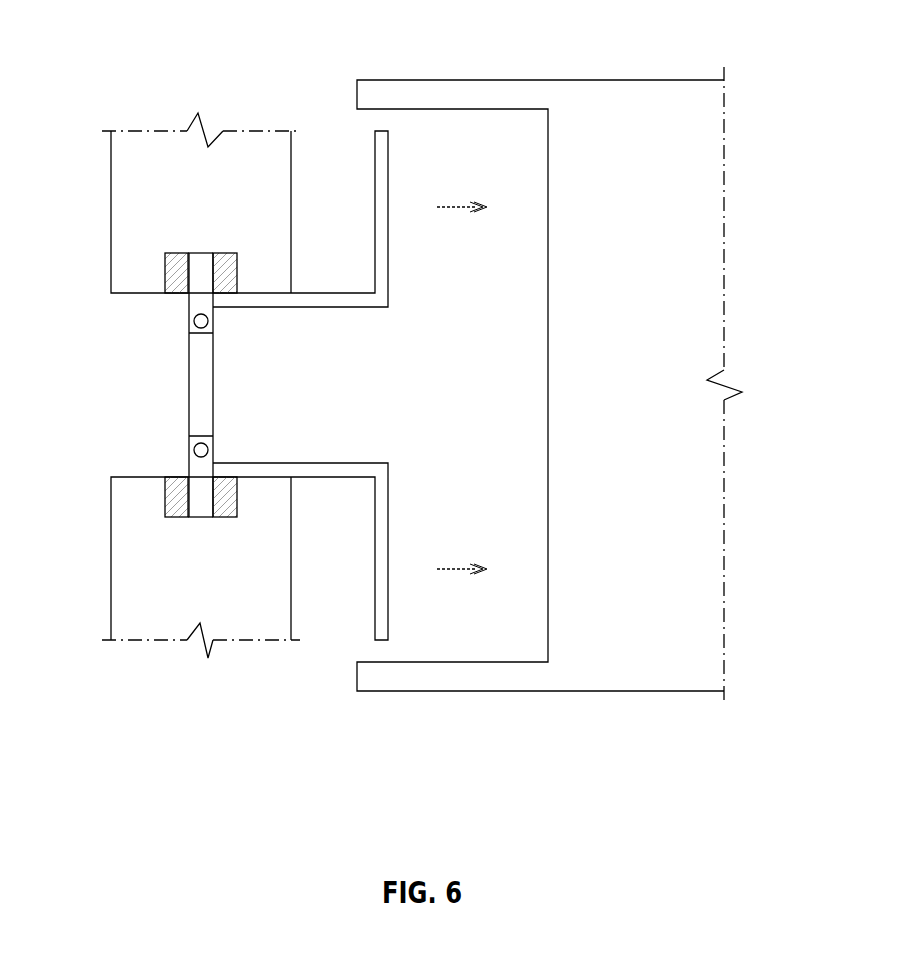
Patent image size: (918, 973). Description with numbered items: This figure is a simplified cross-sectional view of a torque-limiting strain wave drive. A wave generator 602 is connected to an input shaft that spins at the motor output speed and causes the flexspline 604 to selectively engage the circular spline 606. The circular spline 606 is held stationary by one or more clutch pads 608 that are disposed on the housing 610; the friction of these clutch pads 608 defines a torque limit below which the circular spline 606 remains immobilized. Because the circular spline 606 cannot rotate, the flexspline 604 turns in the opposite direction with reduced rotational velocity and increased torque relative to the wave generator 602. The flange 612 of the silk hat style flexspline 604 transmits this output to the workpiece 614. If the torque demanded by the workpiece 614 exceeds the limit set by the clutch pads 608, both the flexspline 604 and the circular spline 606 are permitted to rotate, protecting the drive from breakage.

The wave generator 602 is at (198, 390).
The flexspline 604 is at (325, 473).
The circular spline 606 is at (198, 503).
The clutch pads 608 is at (228, 270).
The housing 610 is at (128, 543).
The flange 612 is at (377, 158).
The workpiece 614 is at (692, 182).